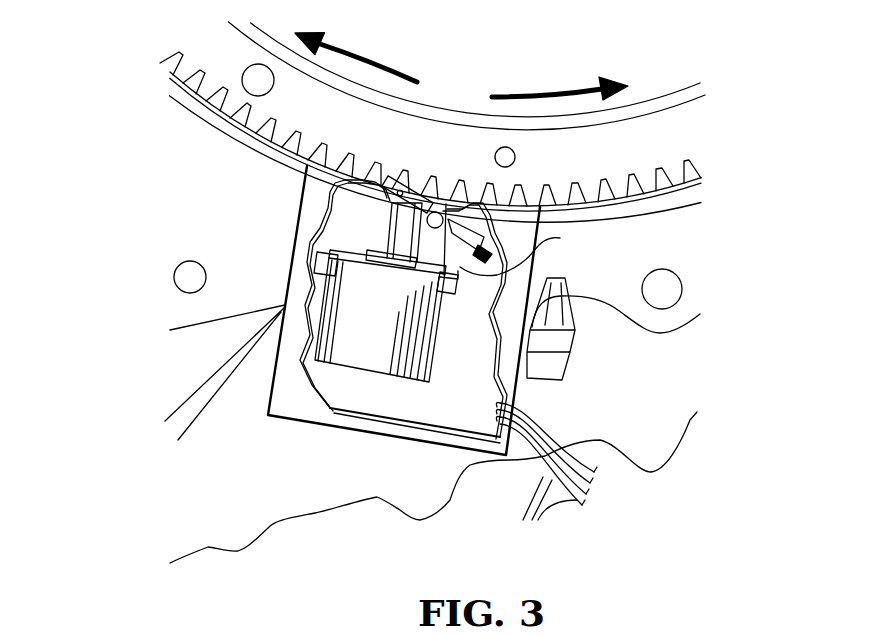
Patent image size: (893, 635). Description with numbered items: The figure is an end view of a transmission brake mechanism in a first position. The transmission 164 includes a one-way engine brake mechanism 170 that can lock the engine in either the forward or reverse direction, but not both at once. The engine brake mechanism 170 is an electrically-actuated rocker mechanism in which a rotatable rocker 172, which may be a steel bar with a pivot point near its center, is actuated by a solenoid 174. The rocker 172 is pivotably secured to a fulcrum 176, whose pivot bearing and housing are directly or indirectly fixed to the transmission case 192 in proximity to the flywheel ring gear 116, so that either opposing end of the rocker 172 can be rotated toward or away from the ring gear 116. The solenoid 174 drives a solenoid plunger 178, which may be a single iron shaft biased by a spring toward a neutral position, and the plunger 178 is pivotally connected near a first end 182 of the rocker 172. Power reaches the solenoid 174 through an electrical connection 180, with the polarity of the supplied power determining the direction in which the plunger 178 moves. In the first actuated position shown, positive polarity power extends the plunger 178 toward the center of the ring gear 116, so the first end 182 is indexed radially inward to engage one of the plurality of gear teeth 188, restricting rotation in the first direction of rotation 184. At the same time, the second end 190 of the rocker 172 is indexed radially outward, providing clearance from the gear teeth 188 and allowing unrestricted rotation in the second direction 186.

The ring gear 116 is at (654, 137).
The transmission 164 is at (128, 150).
The engine brake mechanism 170 is at (283, 283).
The rocker 172 is at (513, 267).
The solenoid 174 is at (395, 320).
The fulcrum 176 is at (437, 211).
The solenoid plunger 178 is at (387, 240).
The electrical connection 180 is at (546, 490).
The first end 182 is at (378, 172).
The first direction of rotation 184 is at (566, 92).
The second direction 186 is at (342, 52).
The gear teeth 188 is at (648, 183).
The second end 190 is at (560, 238).
The transmission case 192 is at (207, 342).